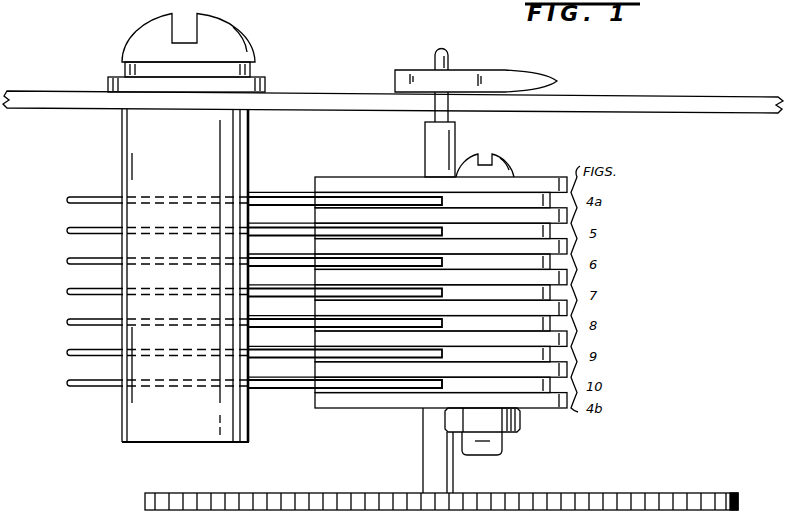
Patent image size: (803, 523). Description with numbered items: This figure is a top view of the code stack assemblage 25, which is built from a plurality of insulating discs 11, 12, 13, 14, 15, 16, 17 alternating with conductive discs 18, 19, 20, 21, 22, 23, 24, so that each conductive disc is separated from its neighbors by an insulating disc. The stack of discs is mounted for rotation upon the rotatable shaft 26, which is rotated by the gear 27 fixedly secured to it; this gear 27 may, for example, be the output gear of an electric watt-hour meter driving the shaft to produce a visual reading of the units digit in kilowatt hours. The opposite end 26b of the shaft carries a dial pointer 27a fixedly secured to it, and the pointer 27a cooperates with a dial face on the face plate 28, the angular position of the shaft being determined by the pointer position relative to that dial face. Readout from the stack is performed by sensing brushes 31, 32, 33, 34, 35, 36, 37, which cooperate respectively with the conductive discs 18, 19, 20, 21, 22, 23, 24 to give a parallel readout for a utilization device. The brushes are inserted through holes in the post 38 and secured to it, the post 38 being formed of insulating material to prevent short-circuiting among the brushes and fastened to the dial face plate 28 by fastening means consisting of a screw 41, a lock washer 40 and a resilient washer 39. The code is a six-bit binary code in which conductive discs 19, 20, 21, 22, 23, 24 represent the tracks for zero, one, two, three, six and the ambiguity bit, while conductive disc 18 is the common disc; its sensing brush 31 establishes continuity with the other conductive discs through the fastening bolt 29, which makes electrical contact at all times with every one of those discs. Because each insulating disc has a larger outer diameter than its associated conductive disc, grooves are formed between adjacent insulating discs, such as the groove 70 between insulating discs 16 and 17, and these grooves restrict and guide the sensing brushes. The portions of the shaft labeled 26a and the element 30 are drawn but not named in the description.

The insulating disc 11 is at (441, 215).
The insulating disc 12 is at (441, 246).
The insulating disc 13 is at (441, 276).
The insulating disc 14 is at (441, 307).
The insulating disc 15 is at (441, 338).
The insulating disc 16 is at (441, 369).
The insulating disc 17 is at (441, 400).
The conductive disc 18 is at (432, 199).
The conductive disc 19 is at (432, 230).
The conductive disc 20 is at (432, 261).
The conductive disc 21 is at (432, 292).
The conductive disc 22 is at (432, 323).
The conductive disc 23 is at (432, 353).
The conductive disc 24 is at (432, 384).
The code stack assemblage 25 is at (457, 315).
The rotatable shaft 26 is at (424, 143).
The lower shaft 26a is at (421, 459).
The opposite end of shaft 26b is at (452, 42).
The gear 27 is at (673, 494).
The dial pointer 27a is at (503, 74).
The face plate 28 is at (604, 99).
The fastening bolt 29 is at (510, 171).
The nut 30 is at (505, 431).
The sensing brush 31 is at (283, 184).
The sensing brush 32 is at (289, 227).
The sensing brush 33 is at (289, 257).
The sensing brush 34 is at (289, 288).
The sensing brush 35 is at (289, 318).
The sensing brush 36 is at (289, 349).
The sensing brush 37 is at (289, 379).
The post 38 is at (250, 151).
The resilient washer 39 is at (267, 86).
The lock washer 40 is at (252, 73).
The screw 41 is at (246, 47).
The groove 70 is at (328, 379).